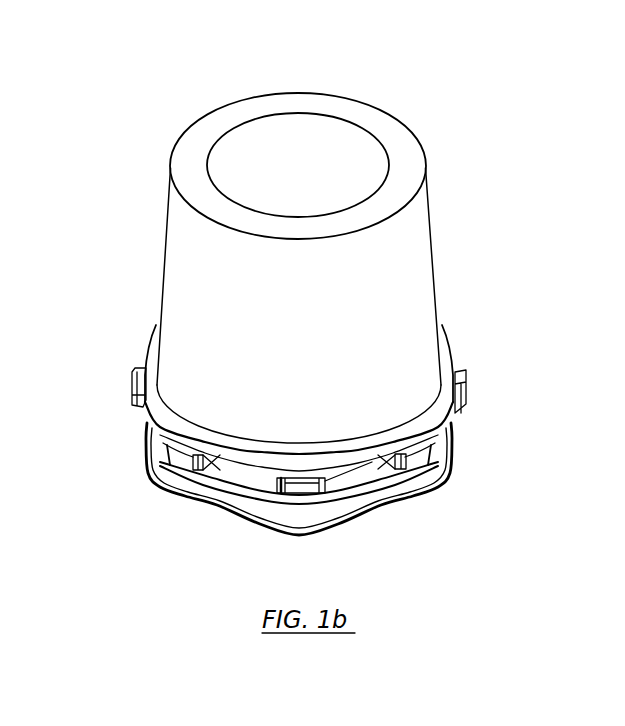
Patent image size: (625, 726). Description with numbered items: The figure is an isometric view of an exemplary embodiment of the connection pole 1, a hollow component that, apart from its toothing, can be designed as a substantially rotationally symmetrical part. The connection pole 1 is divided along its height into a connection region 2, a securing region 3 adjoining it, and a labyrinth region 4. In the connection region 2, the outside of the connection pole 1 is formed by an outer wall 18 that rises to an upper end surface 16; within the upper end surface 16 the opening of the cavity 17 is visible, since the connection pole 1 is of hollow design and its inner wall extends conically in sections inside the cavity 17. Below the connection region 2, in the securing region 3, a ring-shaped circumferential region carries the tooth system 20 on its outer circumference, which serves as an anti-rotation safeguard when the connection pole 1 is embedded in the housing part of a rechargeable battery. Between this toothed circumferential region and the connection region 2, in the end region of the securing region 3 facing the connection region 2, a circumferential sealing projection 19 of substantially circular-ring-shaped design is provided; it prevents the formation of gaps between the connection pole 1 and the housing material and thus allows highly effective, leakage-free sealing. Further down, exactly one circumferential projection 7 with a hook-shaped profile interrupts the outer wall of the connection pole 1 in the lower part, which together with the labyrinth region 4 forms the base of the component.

The connection pole 1 is at (443, 82).
The connection region 2 is at (478, 118).
The securing region 3 is at (478, 358).
The labyrinth region 4 is at (180, 492).
The circumferential projection 7 is at (299, 478).
The upper end surface 16 is at (180, 172).
The cavity 17 is at (238, 176).
The outer wall 18 is at (193, 318).
The circumferential sealing projection 19 is at (146, 366).
The tooth system 20 is at (132, 393).